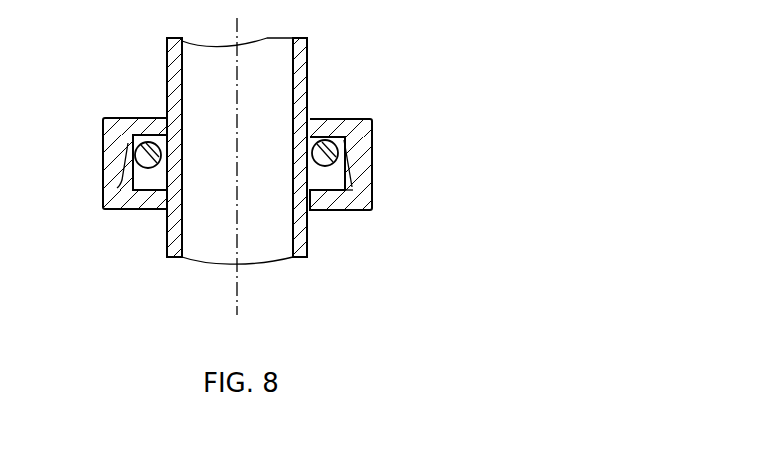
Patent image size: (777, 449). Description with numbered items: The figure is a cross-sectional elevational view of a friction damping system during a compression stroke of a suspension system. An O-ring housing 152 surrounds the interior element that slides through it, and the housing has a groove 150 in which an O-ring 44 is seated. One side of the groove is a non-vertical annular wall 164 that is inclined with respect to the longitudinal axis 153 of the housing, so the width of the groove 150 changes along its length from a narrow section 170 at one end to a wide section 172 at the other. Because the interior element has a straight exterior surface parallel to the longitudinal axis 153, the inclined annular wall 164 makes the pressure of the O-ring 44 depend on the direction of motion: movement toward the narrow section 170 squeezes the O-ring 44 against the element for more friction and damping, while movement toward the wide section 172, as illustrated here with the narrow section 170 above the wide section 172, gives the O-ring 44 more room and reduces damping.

The O-ring 44 is at (146, 152).
The groove 150 is at (340, 190).
The O-ring housing 152 is at (316, 136).
The longitudinal axis 153 is at (238, 298).
The annular wall 164 is at (125, 181).
The narrow section 170 is at (345, 140).
The wide section 172 is at (353, 189).